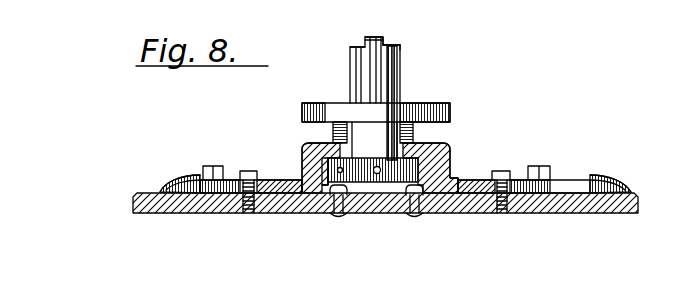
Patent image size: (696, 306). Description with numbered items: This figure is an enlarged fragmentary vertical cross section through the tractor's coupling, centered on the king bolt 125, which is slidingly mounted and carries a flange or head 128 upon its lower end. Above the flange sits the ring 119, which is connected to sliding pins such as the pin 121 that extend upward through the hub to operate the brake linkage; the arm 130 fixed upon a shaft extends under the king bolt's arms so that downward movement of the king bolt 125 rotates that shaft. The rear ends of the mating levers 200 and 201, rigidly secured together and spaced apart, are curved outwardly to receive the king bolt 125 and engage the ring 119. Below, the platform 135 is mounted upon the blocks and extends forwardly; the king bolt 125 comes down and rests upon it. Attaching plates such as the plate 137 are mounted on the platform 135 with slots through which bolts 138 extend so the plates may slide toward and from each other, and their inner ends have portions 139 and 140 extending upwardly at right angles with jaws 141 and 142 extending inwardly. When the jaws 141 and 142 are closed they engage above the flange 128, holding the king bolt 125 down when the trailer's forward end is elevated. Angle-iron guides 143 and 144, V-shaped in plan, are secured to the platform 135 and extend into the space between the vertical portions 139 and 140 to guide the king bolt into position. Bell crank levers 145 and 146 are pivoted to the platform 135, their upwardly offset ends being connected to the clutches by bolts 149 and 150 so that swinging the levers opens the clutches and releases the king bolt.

The ring 119 is at (452, 126).
The sliding pin 121 is at (380, 68).
The king bolt 125 is at (402, 50).
The flange or head 128 is at (367, 170).
The arm 130 is at (276, 179).
The platform 135 is at (568, 249).
The attaching plate 137 is at (488, 178).
The screw 138 is at (235, 170).
The upwardly extending portion 139 is at (320, 162).
The upwardly extending portion 140 is at (456, 160).
The jaw 141 is at (306, 145).
The jaw 142 is at (453, 143).
The guide 143 is at (316, 187).
The guide 144 is at (444, 187).
The bell crank lever 145 is at (170, 178).
The bell crank lever 146 is at (592, 188).
The bolt 149 is at (198, 163).
The bolt 150 is at (552, 168).
The mating lever 200 is at (342, 125).
The mating lever 201 is at (433, 87).